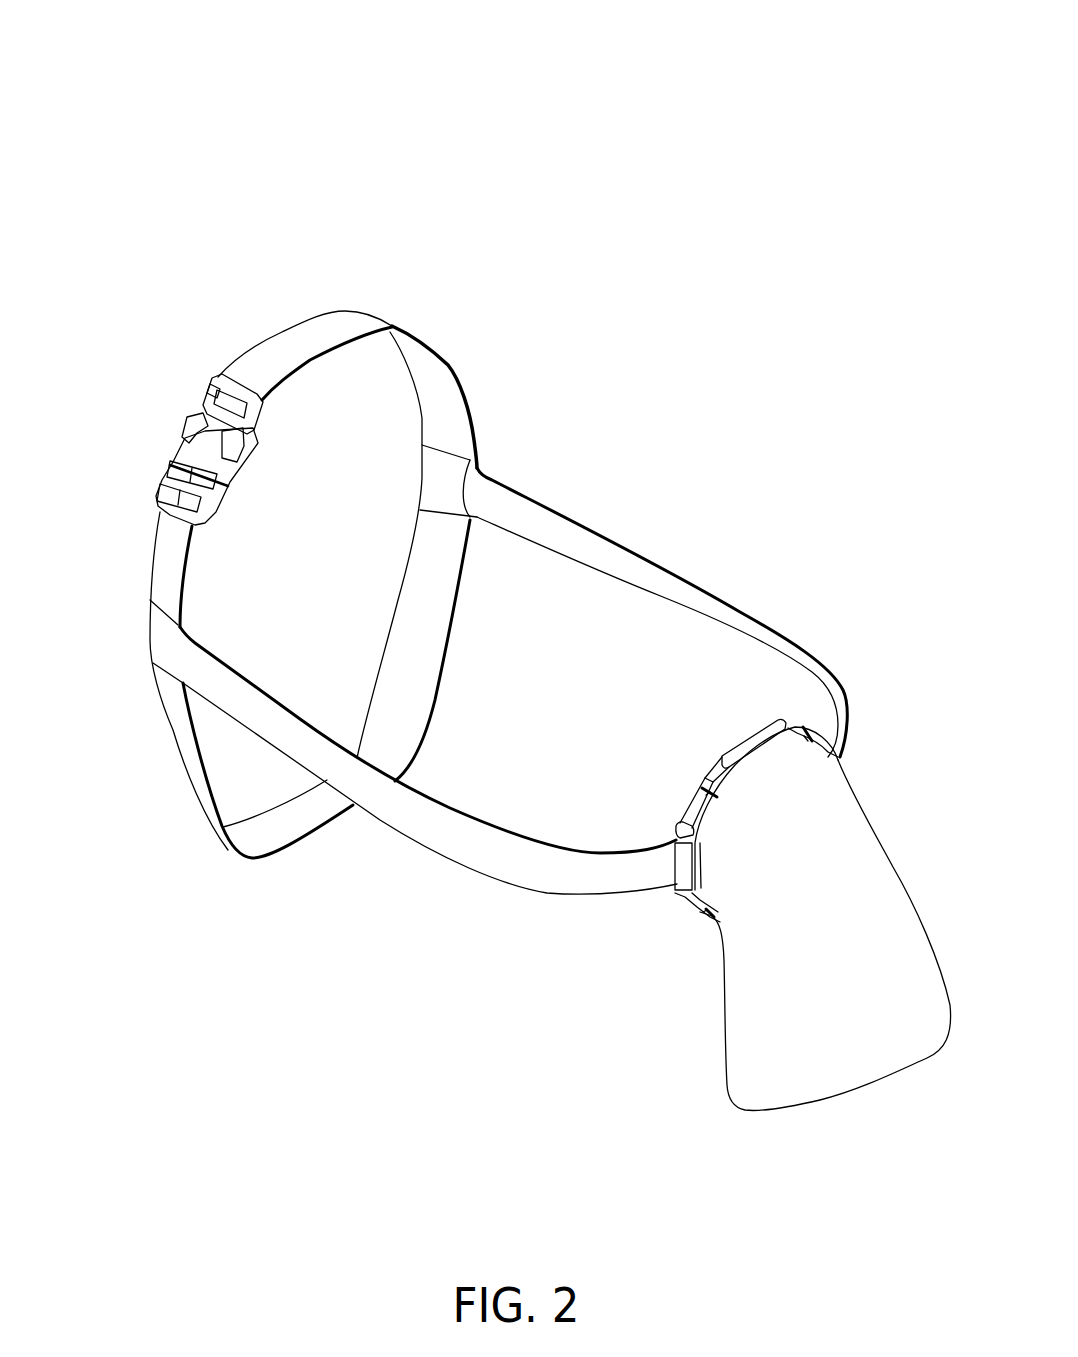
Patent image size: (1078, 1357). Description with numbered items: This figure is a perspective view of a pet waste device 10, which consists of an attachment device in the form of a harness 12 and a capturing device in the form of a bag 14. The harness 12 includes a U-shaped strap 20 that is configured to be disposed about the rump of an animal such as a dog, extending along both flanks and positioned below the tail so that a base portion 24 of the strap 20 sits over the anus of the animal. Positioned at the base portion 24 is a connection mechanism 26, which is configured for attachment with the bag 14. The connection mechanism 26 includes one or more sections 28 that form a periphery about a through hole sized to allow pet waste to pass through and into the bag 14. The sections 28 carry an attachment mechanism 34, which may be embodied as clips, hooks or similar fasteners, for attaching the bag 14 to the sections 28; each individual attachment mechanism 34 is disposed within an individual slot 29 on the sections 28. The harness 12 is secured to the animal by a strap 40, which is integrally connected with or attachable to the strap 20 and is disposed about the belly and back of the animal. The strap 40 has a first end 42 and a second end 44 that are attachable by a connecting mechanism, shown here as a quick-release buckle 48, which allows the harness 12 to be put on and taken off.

The pet waste device 10 is at (118, 178).
The harness 12 is at (655, 464).
The bag 14 is at (823, 887).
The strap 20 is at (657, 570).
The base portion 24 is at (708, 768).
The connection mechanism 26 is at (703, 778).
The sections 28 is at (778, 715).
The slot 29 is at (811, 733).
The attachment mechanism 34 is at (805, 732).
The strap 40 is at (303, 345).
The first end 42 is at (192, 422).
The second end 44 is at (228, 480).
The quick-release buckle 48 is at (168, 437).